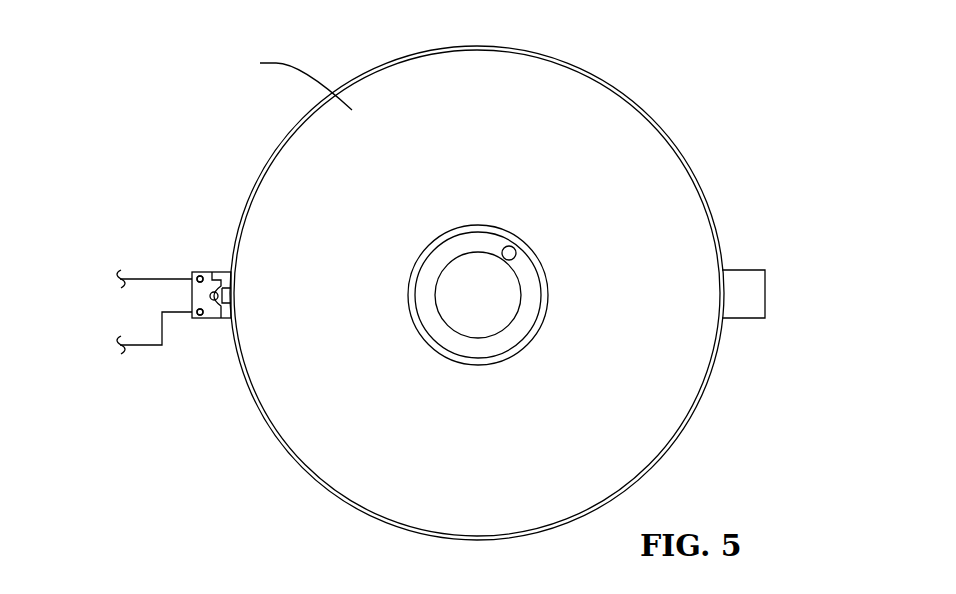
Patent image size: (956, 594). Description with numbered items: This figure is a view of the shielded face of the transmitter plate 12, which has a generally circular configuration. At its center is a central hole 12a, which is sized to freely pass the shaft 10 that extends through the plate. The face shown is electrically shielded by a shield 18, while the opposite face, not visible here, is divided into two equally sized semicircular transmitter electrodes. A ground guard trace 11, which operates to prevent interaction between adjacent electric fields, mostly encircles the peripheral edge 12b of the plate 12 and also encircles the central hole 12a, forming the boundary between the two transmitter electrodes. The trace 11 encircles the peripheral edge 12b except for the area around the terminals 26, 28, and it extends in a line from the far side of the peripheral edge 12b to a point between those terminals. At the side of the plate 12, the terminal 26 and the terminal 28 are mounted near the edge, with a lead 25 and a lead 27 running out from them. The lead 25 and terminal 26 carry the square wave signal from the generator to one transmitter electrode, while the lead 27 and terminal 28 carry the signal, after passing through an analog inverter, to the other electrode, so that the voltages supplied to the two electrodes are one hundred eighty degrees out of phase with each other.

The shaft 10 is at (455, 332).
The ground guard trace 11 is at (211, 320).
The transmitter plate 12 is at (260, 150).
The central hole 12a is at (515, 257).
The peripheral edge 12b is at (612, 88).
The shield 18 is at (294, 82).
The lead 25 is at (157, 279).
The terminal 26 is at (200, 275).
The lead 27 is at (150, 348).
The terminal 28 is at (203, 318).